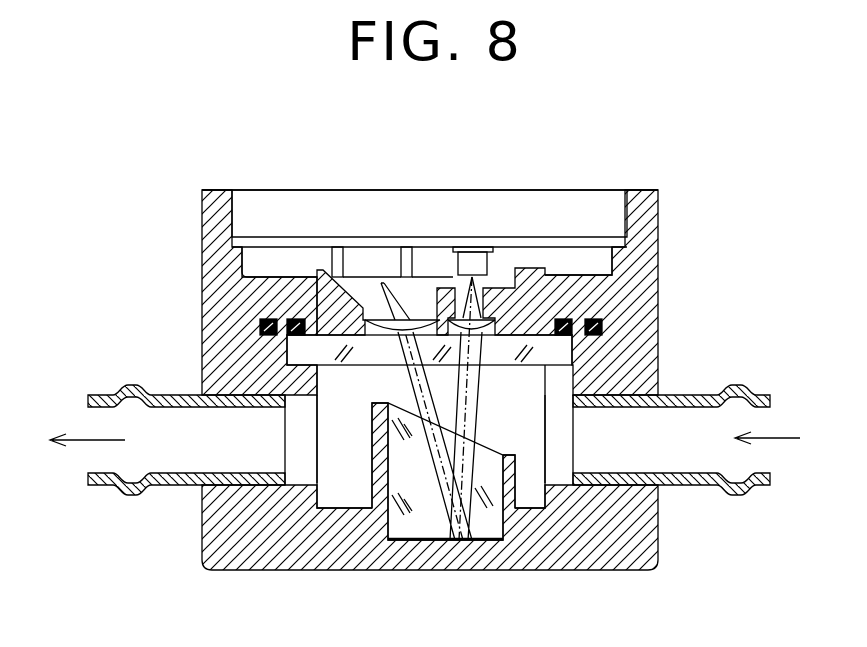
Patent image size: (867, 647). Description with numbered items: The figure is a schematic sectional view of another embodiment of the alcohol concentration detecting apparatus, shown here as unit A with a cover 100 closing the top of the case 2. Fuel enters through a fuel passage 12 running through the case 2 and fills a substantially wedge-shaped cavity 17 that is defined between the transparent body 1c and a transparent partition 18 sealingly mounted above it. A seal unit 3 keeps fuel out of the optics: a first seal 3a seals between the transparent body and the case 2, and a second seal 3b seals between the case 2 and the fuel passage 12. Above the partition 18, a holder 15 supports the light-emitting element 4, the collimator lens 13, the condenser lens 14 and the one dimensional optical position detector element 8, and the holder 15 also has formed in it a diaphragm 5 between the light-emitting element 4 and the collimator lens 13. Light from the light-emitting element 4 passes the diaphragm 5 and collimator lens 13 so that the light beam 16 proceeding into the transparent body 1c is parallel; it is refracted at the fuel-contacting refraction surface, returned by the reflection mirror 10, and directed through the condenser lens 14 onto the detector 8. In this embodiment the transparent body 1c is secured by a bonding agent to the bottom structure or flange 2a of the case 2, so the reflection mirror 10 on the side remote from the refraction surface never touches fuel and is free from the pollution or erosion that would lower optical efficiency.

The case 2 is at (430, 411).
The flange 2a is at (345, 492).
The transparent body 1c is at (380, 468).
The reflection mirror 10 is at (427, 541).
The fuel passage 12 is at (300, 462).
The wedge-shaped cavity 17 is at (545, 383).
The transparent partition 18 is at (300, 355).
The seal unit 3 is at (515, 278).
The first seal 3a is at (583, 292).
The second seal 3b is at (600, 316).
The cover 100 is at (557, 235).
The holder 15 is at (325, 290).
The condenser lens 14 is at (377, 280).
The optical position detector element 8 is at (394, 258).
The collimator lens 13 is at (452, 290).
The light-emitting element 4 is at (468, 260).
The diaphragm 5 is at (482, 290).
The light beam 16 is at (483, 400).
The detector unit A is at (168, 222).